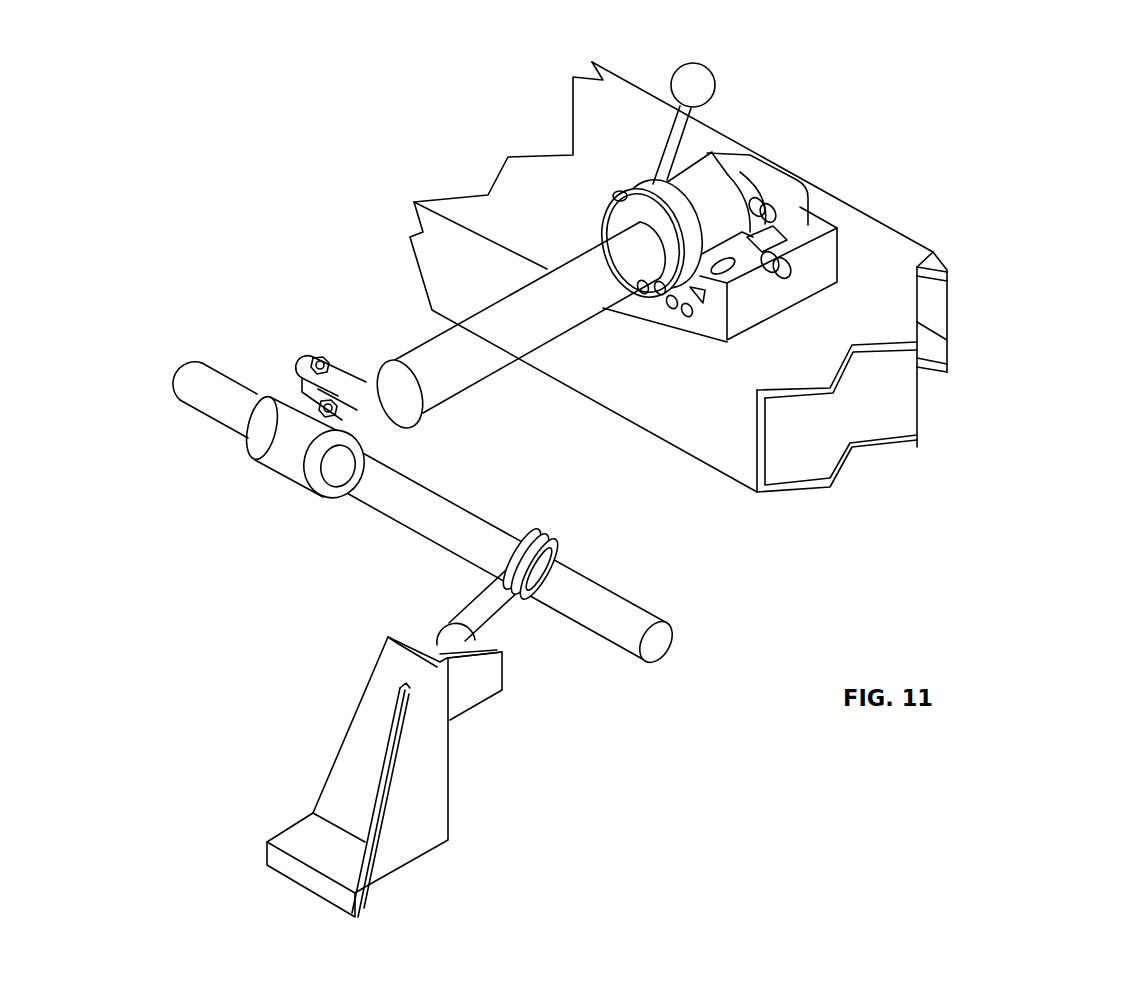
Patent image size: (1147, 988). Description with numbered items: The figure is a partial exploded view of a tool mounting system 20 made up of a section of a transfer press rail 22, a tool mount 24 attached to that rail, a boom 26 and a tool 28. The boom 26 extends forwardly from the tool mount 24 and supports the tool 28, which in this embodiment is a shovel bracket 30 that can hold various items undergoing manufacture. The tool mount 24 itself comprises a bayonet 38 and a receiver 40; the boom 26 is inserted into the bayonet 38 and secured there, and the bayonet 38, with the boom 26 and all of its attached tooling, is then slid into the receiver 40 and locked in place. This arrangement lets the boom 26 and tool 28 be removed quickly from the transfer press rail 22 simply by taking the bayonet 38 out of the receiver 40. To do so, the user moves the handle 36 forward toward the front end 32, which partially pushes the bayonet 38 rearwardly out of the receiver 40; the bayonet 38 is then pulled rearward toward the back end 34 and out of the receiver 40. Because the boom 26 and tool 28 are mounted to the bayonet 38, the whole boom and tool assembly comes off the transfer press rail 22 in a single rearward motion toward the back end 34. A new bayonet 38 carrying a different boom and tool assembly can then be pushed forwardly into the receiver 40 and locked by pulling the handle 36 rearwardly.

The tool mounting system 20 is at (315, 230).
The transfer press rail 22 is at (893, 250).
The tool mount 24 is at (866, 124).
The boom 26 is at (454, 365).
The tool 28 is at (290, 712).
The shovel bracket 30 is at (425, 787).
The front end 32 is at (248, 542).
The back end 34 is at (1005, 126).
The handle 36 is at (720, 60).
The bayonet 38 is at (708, 190).
The receiver 40 is at (750, 310).